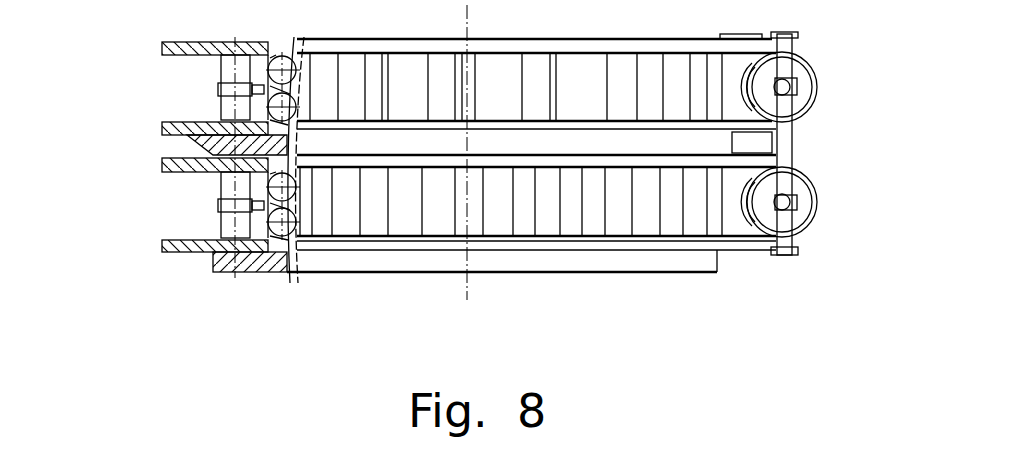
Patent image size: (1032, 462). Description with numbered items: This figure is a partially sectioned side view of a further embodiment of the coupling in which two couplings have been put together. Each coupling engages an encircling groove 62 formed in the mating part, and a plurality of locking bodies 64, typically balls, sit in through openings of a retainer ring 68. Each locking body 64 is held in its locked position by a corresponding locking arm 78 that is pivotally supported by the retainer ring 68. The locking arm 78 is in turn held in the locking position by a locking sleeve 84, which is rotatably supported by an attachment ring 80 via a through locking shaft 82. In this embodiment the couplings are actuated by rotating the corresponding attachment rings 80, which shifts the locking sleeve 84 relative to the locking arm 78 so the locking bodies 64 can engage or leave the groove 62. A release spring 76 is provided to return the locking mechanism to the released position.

The encircling groove 62 is at (286, 273).
The locking body 64 is at (236, 262).
The retainer ring 68 is at (272, 260).
The release spring 76 is at (803, 197).
The locking arm 78 is at (230, 227).
The attachment ring 80 is at (160, 160).
The locking shaft 82 is at (163, 125).
The locking sleeve 84 is at (223, 187).